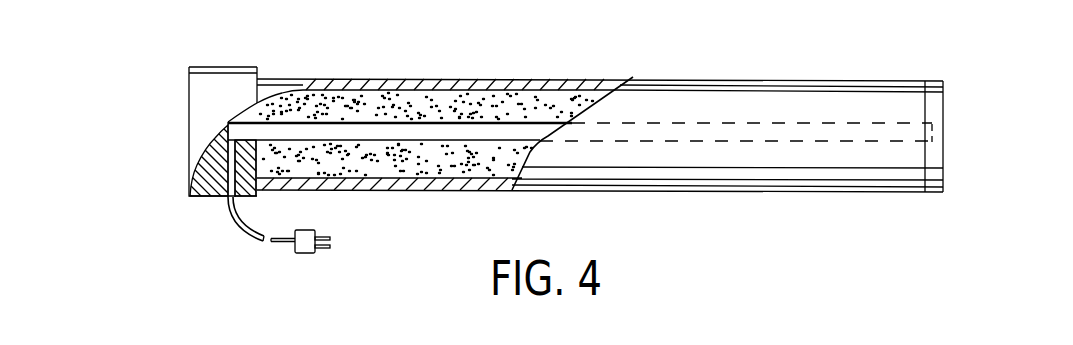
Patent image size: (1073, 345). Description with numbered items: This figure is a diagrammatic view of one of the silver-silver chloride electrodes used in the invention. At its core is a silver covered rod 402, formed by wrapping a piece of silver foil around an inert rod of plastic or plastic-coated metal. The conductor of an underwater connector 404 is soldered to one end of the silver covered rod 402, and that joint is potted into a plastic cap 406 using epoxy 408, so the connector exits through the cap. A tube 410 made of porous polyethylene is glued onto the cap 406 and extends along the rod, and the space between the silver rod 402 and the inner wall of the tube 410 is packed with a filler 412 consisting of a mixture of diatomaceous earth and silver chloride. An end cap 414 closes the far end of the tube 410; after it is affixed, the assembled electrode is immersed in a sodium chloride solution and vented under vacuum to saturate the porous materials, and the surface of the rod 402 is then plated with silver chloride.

The silver covered rod 402 is at (437, 127).
The underwater connector 404 is at (316, 231).
The plastic cap 406 is at (213, 80).
The epoxy 408 is at (195, 146).
The tube 410 is at (622, 100).
The filler 412 is at (357, 100).
The end cap 414 is at (942, 98).